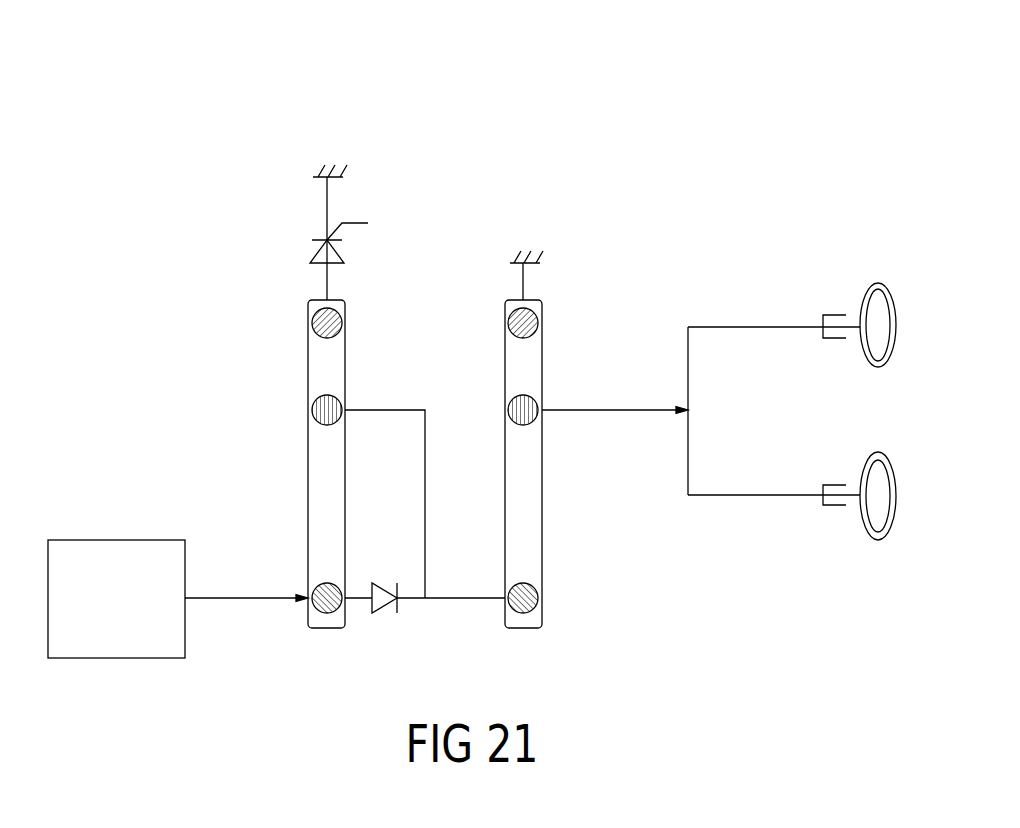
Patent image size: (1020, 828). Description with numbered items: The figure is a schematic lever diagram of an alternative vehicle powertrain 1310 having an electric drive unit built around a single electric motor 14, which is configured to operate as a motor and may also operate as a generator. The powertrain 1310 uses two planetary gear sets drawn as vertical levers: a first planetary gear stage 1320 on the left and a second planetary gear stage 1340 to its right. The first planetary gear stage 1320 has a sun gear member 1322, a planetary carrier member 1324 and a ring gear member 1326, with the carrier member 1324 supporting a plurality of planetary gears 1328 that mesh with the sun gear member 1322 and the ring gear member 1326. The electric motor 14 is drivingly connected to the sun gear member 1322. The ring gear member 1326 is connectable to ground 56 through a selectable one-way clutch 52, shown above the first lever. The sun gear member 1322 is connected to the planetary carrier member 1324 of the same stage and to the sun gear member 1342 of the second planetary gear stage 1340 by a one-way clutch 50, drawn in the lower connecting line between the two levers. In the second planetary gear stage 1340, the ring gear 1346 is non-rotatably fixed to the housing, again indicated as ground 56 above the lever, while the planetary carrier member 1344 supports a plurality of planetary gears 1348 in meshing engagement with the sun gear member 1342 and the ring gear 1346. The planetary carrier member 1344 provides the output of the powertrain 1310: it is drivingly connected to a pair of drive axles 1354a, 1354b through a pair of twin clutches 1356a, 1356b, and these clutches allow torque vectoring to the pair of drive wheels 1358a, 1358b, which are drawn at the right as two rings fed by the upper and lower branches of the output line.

The powertrain 1310 is at (527, 90).
The electric motor 14 is at (105, 611).
The first planetary gear stage 1320 is at (282, 143).
The sun gear member 1322 is at (319, 612).
The planetary carrier member 1324 is at (390, 409).
The ring gear member 1326 is at (311, 313).
The planetary gears 1328 is at (317, 422).
The selectable one-way clutch 52 is at (318, 253).
The ground 56 is at (328, 168).
The one-way clutch 50 is at (388, 613).
The second planetary gear stage 1340 is at (556, 232).
The sun gear member 1342 is at (534, 612).
The planetary carrier member 1344 is at (631, 408).
The ring gear 1346 is at (539, 313).
The planetary gears 1348 is at (531, 424).
The drive axle 1354a is at (853, 322).
The twin clutch 1356a is at (833, 314).
The drive wheel 1358a is at (875, 366).
The drive axle 1354b is at (857, 500).
The twin clutch 1356b is at (835, 506).
The drive wheel 1358b is at (872, 457).